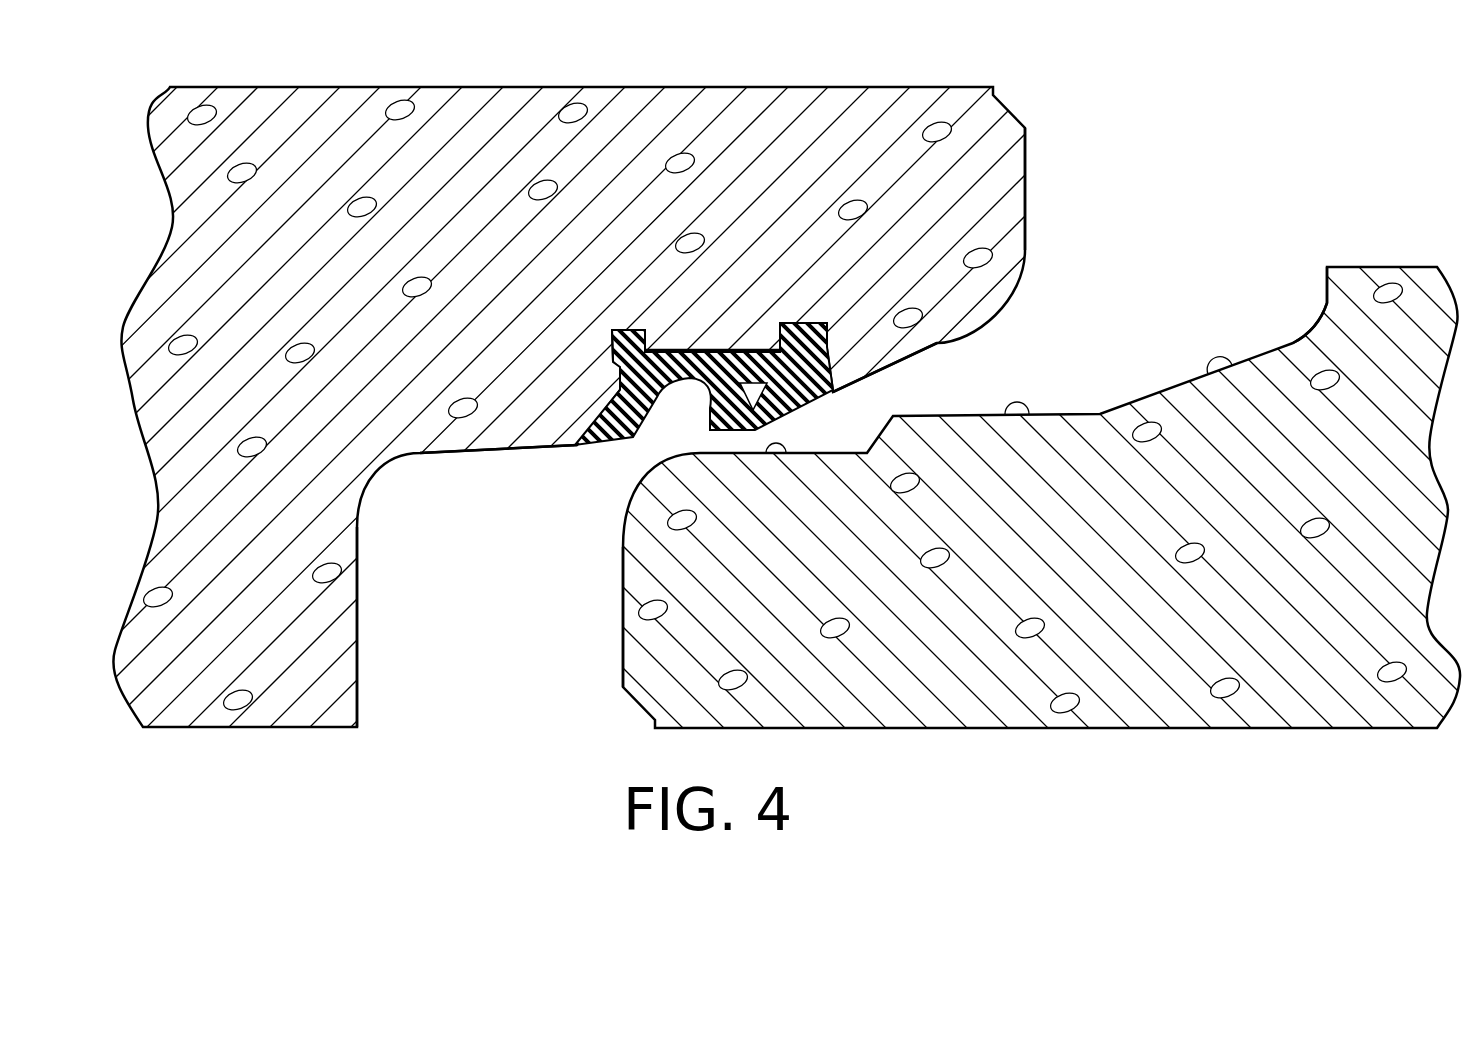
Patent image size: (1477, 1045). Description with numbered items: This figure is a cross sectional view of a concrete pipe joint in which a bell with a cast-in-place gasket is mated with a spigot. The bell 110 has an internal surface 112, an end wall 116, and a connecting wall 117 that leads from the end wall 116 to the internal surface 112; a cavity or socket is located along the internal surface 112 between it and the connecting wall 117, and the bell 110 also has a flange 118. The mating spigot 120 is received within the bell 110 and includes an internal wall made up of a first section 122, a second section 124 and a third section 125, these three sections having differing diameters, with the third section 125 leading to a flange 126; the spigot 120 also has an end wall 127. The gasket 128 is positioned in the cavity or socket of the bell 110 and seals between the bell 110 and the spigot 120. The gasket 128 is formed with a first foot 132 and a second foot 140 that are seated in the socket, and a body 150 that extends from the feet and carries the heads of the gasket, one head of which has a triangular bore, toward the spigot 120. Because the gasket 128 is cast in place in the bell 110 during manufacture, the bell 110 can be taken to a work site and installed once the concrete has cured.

The bell 110 is at (748, 100).
The internal surface 112 is at (492, 455).
The end wall 116 is at (1028, 198).
The connecting wall 117 is at (900, 358).
The flange 118 is at (357, 683).
The mating spigot 120 is at (937, 717).
The first section 122 is at (779, 455).
The second section 124 is at (1018, 412).
The third section 125 is at (1230, 360).
The flange 126 is at (1325, 300).
The end wall 127 is at (623, 665).
The gasket 128 is at (632, 447).
The first foot 132 is at (818, 325).
The second foot 140 is at (625, 328).
The body 150 is at (706, 359).